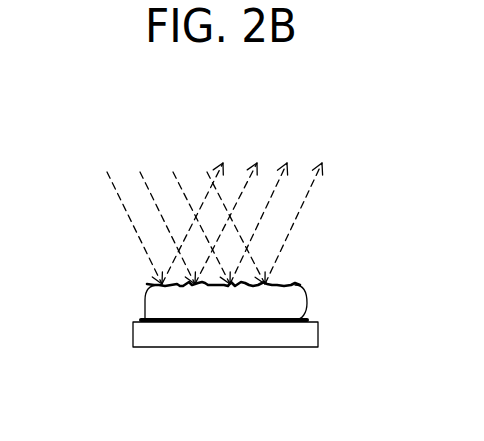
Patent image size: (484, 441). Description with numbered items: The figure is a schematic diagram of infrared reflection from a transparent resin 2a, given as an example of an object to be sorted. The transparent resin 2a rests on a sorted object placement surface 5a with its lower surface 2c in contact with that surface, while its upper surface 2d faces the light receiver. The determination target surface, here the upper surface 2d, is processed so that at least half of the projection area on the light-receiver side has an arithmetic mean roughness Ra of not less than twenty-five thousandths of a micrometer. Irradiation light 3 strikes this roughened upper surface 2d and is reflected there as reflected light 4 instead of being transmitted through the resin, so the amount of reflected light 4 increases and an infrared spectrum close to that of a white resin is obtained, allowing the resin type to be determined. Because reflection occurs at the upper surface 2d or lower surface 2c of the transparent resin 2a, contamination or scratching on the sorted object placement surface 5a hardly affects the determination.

The irradiation light 3 is at (207, 170).
The reflected light 4 is at (218, 183).
The upper surface 2d is at (148, 285).
The transparent resin 2a is at (293, 300).
The sorted object placement surface 5a is at (317, 322).
The lower surface 2c is at (267, 323).